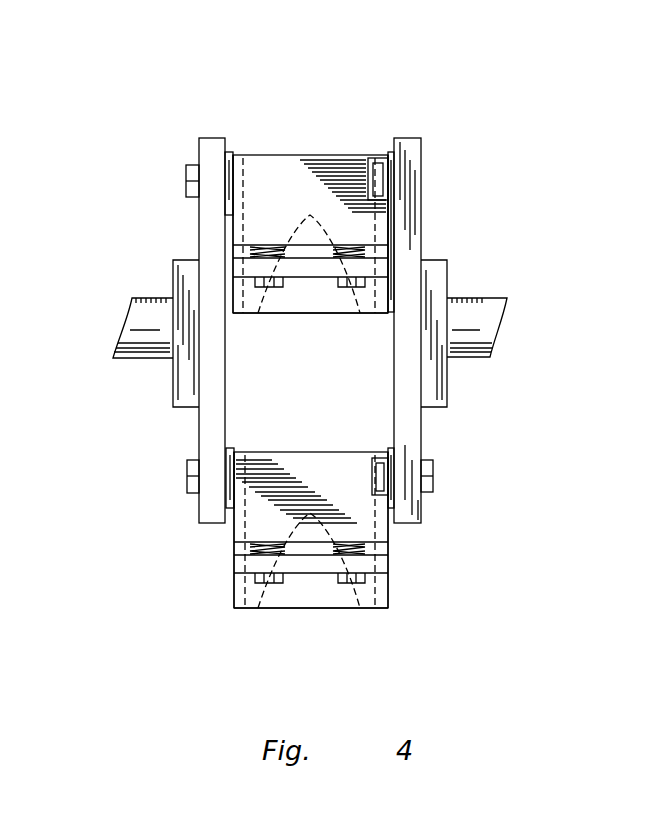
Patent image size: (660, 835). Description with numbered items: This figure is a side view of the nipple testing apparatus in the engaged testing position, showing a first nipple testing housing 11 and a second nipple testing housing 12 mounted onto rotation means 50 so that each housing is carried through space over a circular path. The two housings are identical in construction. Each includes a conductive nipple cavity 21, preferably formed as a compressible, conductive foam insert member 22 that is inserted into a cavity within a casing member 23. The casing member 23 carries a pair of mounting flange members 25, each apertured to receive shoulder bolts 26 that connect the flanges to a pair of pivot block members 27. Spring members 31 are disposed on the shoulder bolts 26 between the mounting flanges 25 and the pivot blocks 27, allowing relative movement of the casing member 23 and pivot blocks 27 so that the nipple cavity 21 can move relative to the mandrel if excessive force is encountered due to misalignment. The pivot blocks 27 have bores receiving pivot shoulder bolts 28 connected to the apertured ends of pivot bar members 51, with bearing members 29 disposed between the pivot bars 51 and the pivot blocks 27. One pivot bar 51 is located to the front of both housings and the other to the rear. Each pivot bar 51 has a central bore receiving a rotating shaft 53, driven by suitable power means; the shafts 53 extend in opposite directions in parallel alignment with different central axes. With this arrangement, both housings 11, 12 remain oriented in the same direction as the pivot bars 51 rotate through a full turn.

The first nipple testing housing 11 is at (255, 636).
The second nipple testing housing 12 is at (316, 118).
The conductive nipple cavity 21 is at (355, 596).
The compressible conductive foam insert member 22 is at (240, 530).
The casing member 23 is at (390, 228).
The mounting flange members 25 is at (392, 268).
The shoulder bolts 26 is at (392, 292).
The pivot block members 27 is at (352, 178).
The pivot shoulder bolts 28 is at (375, 186).
The bearing members 29 is at (228, 153).
The spring members 31 is at (390, 248).
The rotation means 50 is at (352, 330).
The pivot bar members 51 is at (185, 258).
The rotating shaft 53 is at (140, 340).